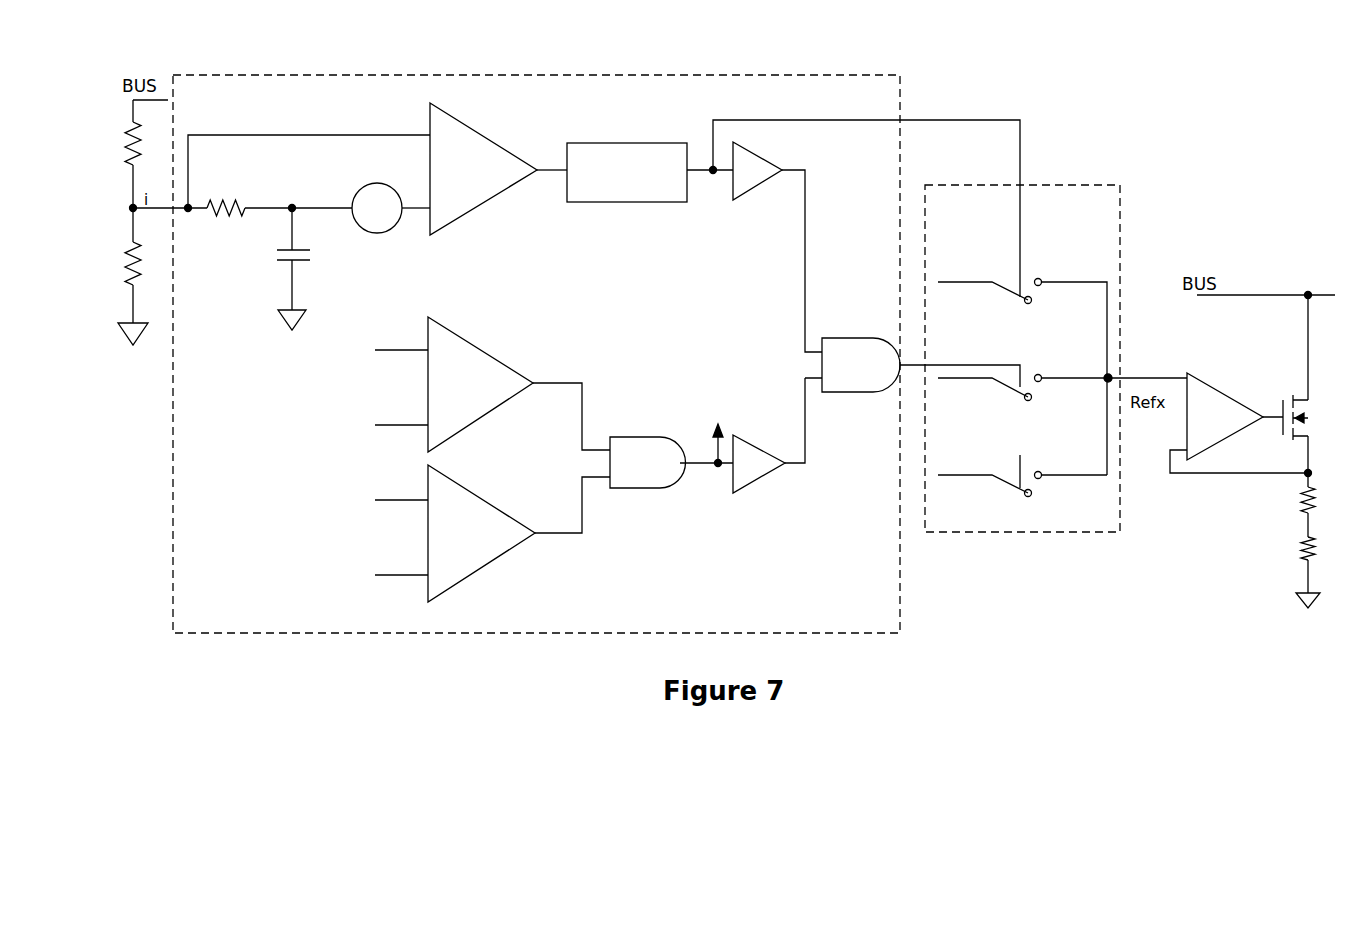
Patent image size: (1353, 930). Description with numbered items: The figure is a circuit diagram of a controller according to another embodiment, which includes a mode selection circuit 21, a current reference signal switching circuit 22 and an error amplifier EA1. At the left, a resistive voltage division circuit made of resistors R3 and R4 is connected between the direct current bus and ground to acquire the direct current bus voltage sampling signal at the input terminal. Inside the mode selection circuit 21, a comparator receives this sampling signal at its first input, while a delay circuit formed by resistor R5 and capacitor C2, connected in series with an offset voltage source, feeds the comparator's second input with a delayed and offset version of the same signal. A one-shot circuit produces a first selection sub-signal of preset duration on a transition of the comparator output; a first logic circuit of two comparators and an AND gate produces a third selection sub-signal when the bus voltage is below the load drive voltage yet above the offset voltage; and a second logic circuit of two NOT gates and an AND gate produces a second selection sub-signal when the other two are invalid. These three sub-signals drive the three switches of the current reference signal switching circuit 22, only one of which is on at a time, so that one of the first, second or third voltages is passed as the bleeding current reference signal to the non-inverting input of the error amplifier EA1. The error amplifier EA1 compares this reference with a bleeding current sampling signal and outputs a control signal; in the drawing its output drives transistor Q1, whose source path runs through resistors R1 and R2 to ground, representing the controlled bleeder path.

The mode selection circuit 21 is at (423, 75).
The current reference signal switching circuit 22 is at (1058, 185).
The resistor R3 is at (119, 143).
The resistor R4 is at (119, 263).
The resistor R5 is at (226, 195).
The capacitor C2 is at (276, 269).
The error amplifier EA1 is at (1225, 416).
The transistor Q1 is at (1302, 417).
The resistor R1 is at (1324, 500).
The resistor R2 is at (1324, 549).